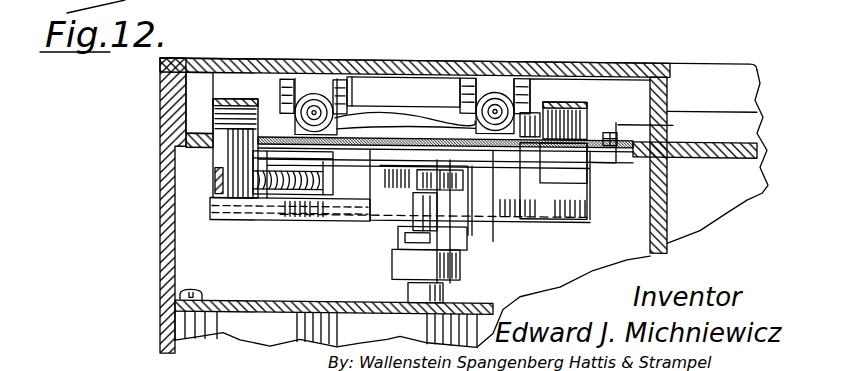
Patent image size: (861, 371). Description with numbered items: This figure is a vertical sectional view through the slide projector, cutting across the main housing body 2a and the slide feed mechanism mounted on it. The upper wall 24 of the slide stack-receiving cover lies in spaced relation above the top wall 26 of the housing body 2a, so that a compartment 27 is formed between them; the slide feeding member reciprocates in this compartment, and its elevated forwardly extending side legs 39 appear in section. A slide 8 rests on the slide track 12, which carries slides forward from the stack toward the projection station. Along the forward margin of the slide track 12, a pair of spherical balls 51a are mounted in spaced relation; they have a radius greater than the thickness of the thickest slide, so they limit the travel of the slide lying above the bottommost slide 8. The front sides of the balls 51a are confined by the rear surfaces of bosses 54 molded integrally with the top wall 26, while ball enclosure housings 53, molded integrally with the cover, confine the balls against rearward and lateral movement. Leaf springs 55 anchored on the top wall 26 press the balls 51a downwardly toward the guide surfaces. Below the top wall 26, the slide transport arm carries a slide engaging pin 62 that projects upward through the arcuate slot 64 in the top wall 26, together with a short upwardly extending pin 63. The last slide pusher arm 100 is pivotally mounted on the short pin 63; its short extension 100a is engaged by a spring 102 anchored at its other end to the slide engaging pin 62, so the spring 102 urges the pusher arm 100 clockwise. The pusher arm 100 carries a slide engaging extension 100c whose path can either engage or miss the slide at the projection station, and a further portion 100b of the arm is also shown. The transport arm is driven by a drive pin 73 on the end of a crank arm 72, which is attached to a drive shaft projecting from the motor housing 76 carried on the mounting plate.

The main housing body 2a is at (158, 163).
The slide 8 is at (485, 205).
The slide track 12 is at (455, 4).
The upper wall 24 is at (450, 62).
The top wall 26 is at (402, 60).
The compartment 27 is at (205, 89).
The forwardly extending side legs 39 is at (225, 97).
The spherical balls 51a is at (403, 92).
The ball enclosure housings 53 is at (275, 93).
The bosses 54 is at (405, 122).
The leaf springs 55 is at (323, 82).
The slide engaging pin 62 is at (213, 165).
The short upwardly extending pin 63 is at (368, 205).
The arcuate slot 64 is at (267, 124).
The crank arm 72 is at (392, 248).
The drive pin 73 is at (396, 222).
The motor housing 76 is at (487, 306).
The last slide pusher arm 100 is at (371, 152).
The short extension 100a is at (395, 238).
The lever block 100b is at (516, 218).
The slide engaging extension 100c is at (673, 120).
The spring 102 is at (275, 200).